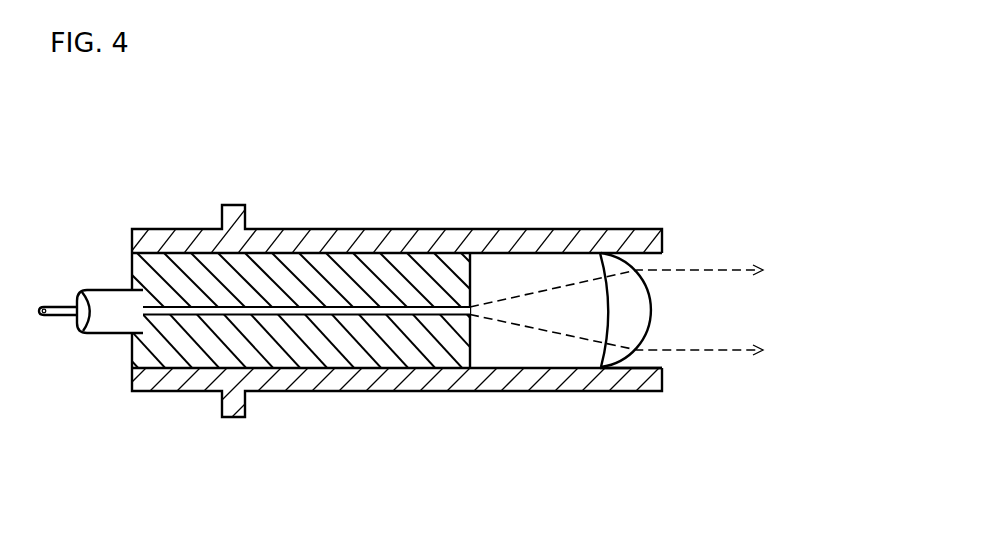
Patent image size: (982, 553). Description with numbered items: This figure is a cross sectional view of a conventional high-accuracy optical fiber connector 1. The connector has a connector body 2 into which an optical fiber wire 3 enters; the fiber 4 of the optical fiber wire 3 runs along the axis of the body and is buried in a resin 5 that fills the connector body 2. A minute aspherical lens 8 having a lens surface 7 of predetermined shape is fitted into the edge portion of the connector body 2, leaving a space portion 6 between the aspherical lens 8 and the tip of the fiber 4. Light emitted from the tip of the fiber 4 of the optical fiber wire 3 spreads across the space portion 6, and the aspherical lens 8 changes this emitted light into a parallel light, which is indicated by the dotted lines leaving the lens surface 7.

The optical fiber connector 1 is at (68, 205).
The connector body 2 is at (450, 229).
The optical fiber wire 3 is at (108, 335).
The fiber 4 is at (316, 306).
The resin 5 is at (357, 353).
The space portion 6 is at (532, 345).
The lens surface 7 is at (652, 298).
The aspherical lens 8 is at (633, 362).